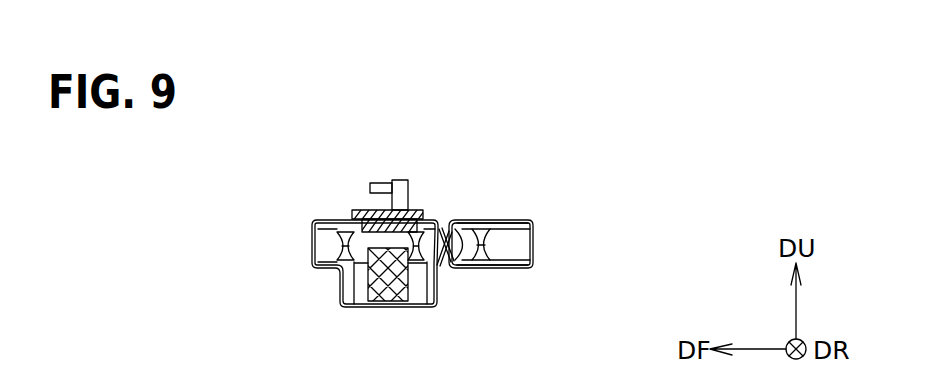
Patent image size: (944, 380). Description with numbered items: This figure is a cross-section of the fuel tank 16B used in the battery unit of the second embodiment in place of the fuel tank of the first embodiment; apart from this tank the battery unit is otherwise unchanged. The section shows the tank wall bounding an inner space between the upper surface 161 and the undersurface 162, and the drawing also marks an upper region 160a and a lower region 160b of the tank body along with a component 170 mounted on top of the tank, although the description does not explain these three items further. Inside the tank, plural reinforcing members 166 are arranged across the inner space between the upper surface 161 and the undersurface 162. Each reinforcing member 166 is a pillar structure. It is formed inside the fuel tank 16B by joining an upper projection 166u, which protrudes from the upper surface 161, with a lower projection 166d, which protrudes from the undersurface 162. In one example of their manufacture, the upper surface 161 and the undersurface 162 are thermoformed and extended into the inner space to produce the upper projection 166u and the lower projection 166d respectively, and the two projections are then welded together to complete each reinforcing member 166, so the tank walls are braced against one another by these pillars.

The fuel tank 16B is at (602, 176).
The upper portion of housing 160a is at (305, 218).
The lower portion of housing 160b is at (305, 270).
The upper surface 161 is at (517, 220).
The undersurface 162 is at (518, 268).
The reinforcing member 166 is at (337, 227).
The upper projection 166u is at (455, 242).
The lower projection 166d is at (448, 256).
The connector 170 is at (424, 206).